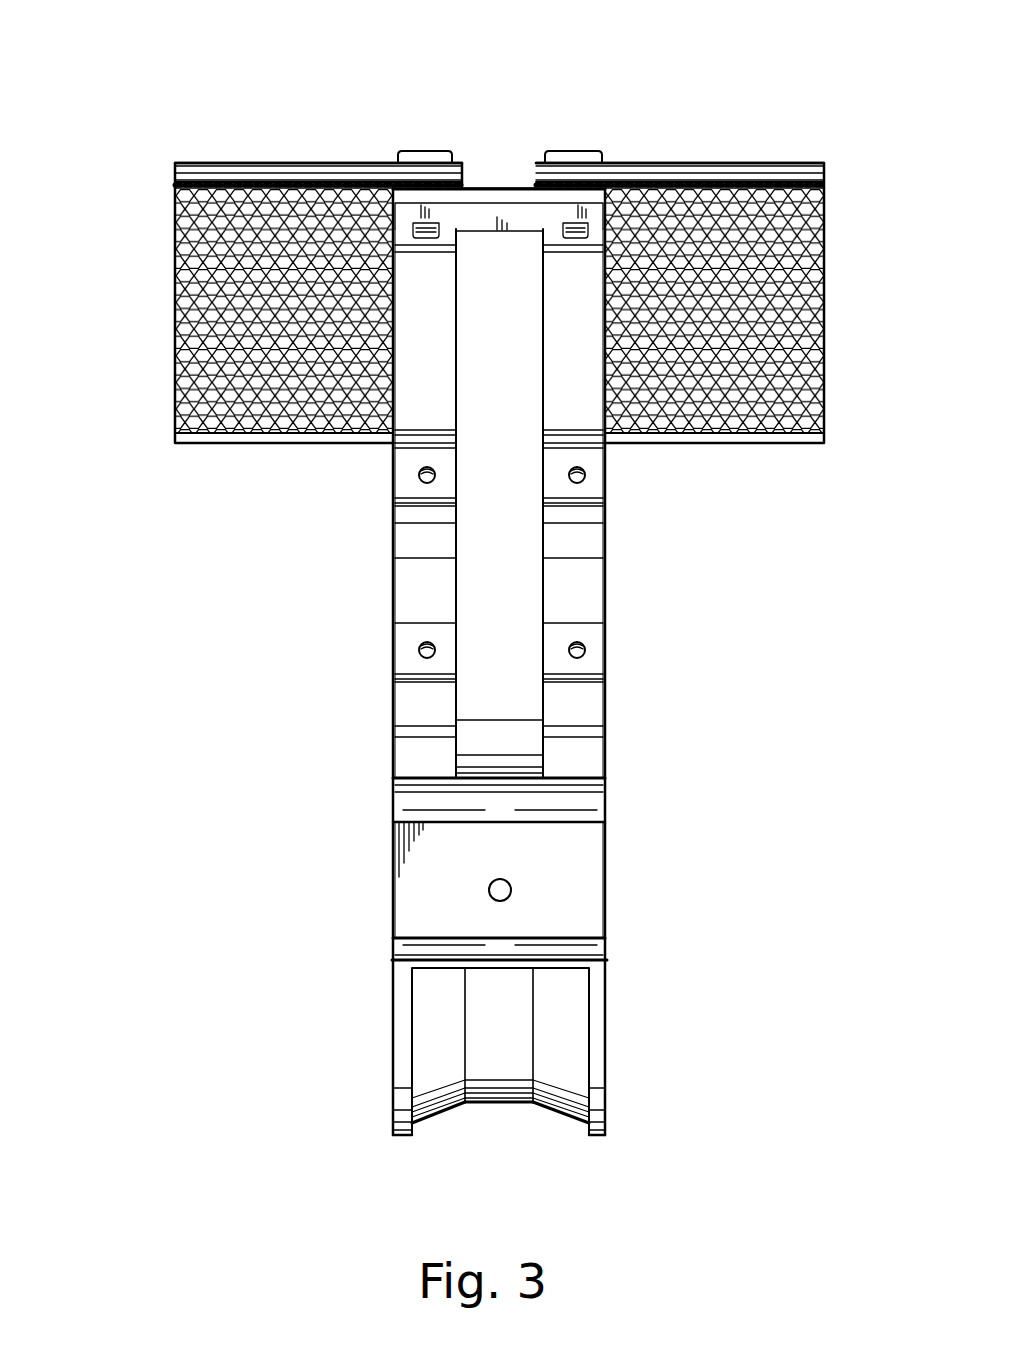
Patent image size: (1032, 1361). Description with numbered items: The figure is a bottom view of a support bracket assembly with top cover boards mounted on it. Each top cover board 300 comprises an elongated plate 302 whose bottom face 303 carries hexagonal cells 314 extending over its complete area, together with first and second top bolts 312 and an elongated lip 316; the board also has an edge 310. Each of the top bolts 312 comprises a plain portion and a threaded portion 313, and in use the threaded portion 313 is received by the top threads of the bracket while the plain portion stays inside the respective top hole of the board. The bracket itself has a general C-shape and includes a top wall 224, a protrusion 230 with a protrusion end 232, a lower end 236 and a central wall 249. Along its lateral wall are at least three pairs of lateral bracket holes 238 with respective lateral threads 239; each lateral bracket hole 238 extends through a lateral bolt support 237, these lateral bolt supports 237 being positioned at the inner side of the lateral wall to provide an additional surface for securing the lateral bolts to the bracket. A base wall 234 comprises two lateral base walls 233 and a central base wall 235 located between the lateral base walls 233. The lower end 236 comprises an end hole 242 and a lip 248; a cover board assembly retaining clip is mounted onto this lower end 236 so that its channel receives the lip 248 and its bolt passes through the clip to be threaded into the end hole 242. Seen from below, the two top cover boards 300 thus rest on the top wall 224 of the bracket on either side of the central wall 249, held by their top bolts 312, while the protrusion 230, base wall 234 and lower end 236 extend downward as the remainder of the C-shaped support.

The top wall 224 is at (500, 186).
The protrusion 230 is at (497, 778).
The protrusion end 232 is at (568, 800).
The lateral base walls 233 is at (557, 1037).
The base wall 234 is at (597, 1000).
The central base wall 235 is at (503, 1090).
The lower end 236 is at (491, 880).
The lateral bolt supports 237 is at (418, 632).
The lateral bracket holes 238 is at (420, 485).
The lateral threads 239 is at (420, 468).
The end hole 242 is at (489, 888).
The lip 248 is at (593, 945).
The central wall 249 is at (488, 637).
The top cover board 300 is at (474, 234).
The elongated plate 302 is at (499, 99).
The bottom face 303 is at (188, 183).
The edge 310 is at (530, 186).
The first and second top bolts 312 is at (587, 150).
The threaded portion 313 is at (415, 228).
The hexagonal cells 314 is at (225, 305).
The elongated lip 316 is at (192, 443).